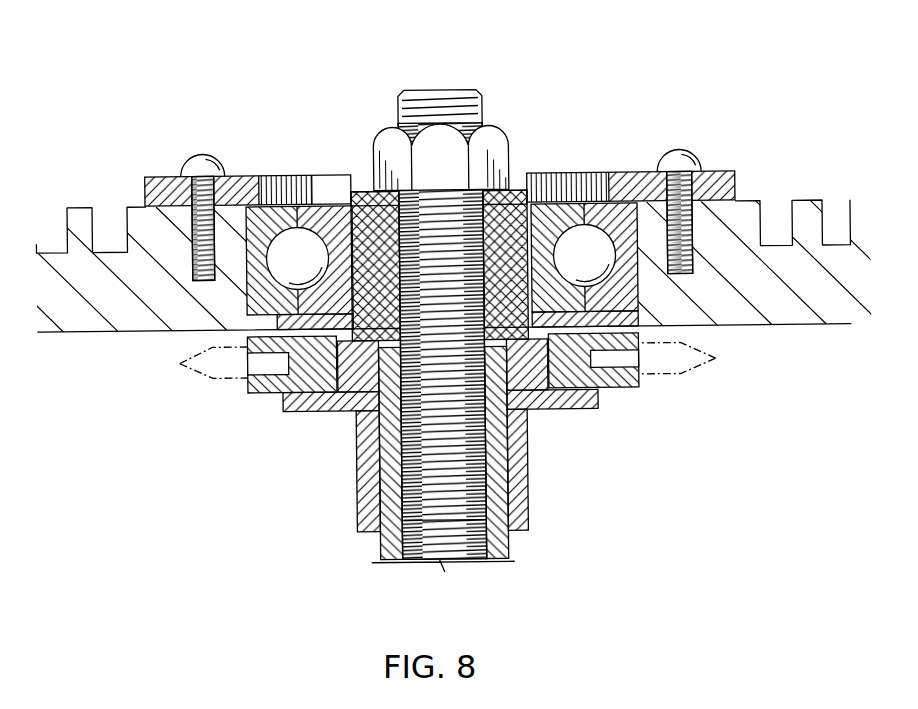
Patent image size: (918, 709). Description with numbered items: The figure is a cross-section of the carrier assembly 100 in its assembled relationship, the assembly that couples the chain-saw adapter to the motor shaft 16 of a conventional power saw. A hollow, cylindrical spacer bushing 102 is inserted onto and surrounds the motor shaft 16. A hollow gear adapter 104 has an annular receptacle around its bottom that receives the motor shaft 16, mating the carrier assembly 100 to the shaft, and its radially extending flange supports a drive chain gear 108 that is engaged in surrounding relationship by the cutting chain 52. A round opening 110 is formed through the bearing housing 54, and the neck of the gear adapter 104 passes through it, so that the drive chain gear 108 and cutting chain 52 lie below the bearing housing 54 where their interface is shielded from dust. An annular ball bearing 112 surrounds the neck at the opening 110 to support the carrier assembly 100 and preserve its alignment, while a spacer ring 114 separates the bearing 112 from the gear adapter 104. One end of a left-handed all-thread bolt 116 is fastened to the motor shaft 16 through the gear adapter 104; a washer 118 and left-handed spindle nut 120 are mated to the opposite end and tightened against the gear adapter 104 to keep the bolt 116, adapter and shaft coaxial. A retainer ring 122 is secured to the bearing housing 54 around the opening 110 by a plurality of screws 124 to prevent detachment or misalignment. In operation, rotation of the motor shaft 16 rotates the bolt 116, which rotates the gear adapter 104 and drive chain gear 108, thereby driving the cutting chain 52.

The motor shaft 16 is at (388, 424).
The cutting chain 52 is at (228, 381).
The bearing housing 54 is at (737, 227).
The carrier assembly 100 is at (559, 449).
The spacer bushing 102 is at (356, 521).
The gear adapter 104 is at (336, 400).
The drive chain gear 108 is at (624, 375).
The round opening 110 is at (540, 187).
The ball bearing 112 is at (344, 198).
The spacer ring 114 is at (283, 324).
The all-thread bolt 116 is at (430, 90).
The washer 118 is at (510, 187).
The spindle nut 120 is at (496, 132).
The retainer ring 122 is at (170, 177).
The screws 124 is at (204, 156).